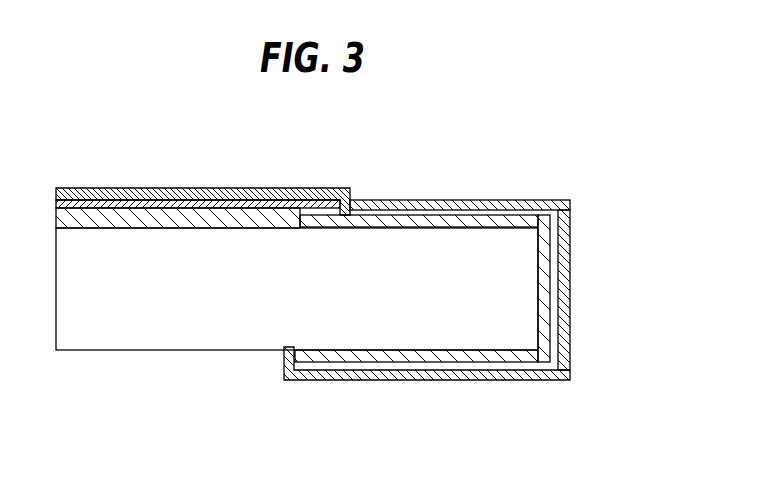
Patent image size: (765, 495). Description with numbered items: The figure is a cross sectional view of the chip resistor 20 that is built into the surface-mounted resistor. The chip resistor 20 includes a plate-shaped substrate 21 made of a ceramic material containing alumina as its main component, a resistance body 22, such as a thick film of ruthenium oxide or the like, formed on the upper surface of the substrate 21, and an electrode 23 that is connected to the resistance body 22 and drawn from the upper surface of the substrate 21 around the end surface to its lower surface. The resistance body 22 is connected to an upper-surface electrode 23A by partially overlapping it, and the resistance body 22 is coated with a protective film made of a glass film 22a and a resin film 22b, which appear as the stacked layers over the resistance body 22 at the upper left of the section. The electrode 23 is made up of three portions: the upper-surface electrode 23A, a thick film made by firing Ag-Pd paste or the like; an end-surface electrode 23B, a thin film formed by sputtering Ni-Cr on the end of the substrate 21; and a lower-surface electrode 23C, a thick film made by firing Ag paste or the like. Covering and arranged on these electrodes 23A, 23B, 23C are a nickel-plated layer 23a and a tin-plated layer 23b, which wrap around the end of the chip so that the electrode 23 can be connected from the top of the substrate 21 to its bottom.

The chip resistor 20 is at (536, 172).
The substrate 21 is at (179, 338).
The resistance body 22 is at (142, 215).
The glass film 22a is at (189, 197).
The resin film 22b is at (255, 205).
The electrode 23 is at (587, 292).
The nickel-plated layer 23a is at (552, 251).
The tin-plated layer 23b is at (553, 335).
The upper-surface electrode 23A is at (399, 228).
The end-surface electrode 23B is at (538, 288).
The lower-surface electrode 23C is at (397, 350).